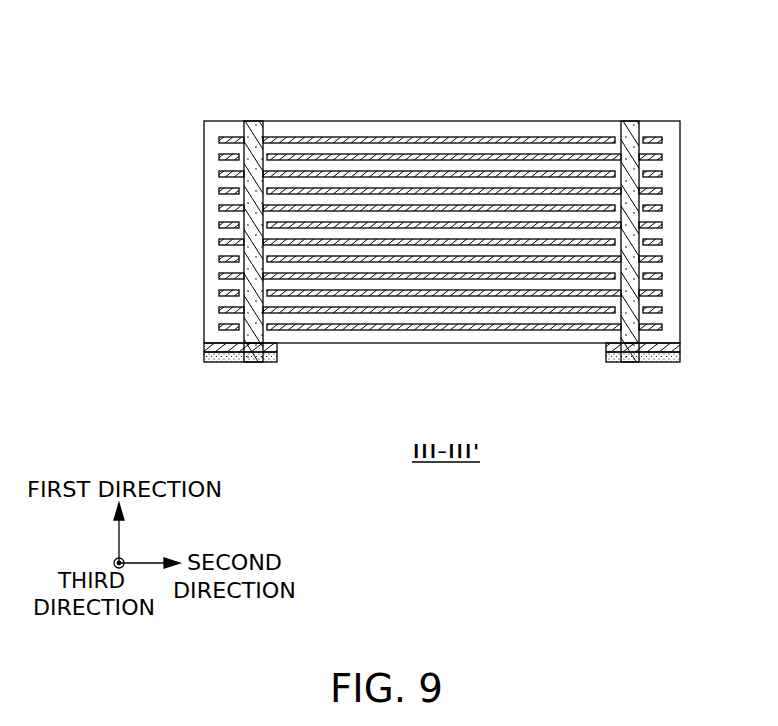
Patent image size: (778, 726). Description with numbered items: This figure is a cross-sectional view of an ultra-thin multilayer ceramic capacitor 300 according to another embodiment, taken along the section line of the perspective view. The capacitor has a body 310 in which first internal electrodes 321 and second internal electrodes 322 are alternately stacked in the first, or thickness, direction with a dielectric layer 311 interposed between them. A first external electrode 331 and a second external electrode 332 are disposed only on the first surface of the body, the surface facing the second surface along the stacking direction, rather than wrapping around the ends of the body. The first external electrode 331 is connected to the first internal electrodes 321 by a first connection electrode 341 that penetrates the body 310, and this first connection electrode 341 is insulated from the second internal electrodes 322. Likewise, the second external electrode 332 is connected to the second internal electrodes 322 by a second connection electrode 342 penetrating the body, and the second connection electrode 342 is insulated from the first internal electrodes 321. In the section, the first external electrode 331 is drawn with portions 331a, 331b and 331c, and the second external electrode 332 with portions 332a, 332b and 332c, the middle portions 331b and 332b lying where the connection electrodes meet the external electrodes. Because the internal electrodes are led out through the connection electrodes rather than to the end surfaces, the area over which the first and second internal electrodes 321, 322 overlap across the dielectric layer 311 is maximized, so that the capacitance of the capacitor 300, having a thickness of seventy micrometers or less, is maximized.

The multilayer ceramic capacitor 300 is at (210, 45).
The body 310 is at (404, 121).
The dielectric layer 311 is at (230, 214).
The first internal electrode 321 is at (231, 137).
The second internal electrode 322 is at (220, 157).
The first external electrode 331 is at (327, 400).
The first electrode layer of first external electrode 331a is at (205, 347).
The connection portion of first external electrode 331b is at (278, 358).
The plating layer of first external electrode 331c is at (243, 352).
The second external electrode 332 is at (703, 400).
The first electrode layer of second external electrode 332a is at (680, 347).
The connection portion of second external electrode 332b is at (640, 353).
The plating layer of second external electrode 332c is at (606, 359).
The first connection electrode 341 is at (248, 247).
The second connection electrode 342 is at (636, 237).